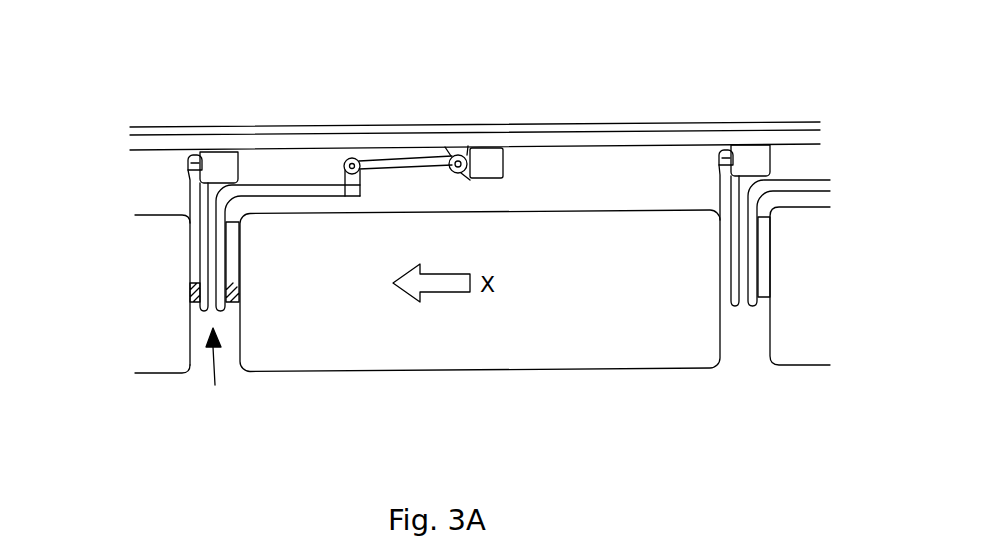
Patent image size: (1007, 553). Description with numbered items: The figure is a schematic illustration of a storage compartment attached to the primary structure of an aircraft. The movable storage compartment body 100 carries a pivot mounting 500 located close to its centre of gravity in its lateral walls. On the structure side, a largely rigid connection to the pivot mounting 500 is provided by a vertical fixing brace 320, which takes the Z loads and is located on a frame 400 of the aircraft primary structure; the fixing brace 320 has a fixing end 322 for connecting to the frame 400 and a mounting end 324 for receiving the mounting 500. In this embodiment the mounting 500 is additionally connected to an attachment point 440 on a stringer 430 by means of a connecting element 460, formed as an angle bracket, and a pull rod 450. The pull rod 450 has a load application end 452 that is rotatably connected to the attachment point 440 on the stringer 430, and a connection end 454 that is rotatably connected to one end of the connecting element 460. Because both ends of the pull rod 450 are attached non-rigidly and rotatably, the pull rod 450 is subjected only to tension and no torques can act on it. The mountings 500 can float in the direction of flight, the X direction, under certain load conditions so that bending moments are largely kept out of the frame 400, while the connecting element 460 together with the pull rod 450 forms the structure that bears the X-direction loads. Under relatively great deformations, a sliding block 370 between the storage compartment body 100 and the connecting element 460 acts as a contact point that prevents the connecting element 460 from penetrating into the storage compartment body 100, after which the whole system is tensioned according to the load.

The storage compartment body 100 is at (535, 340).
The fixing brace 320 is at (192, 184).
The fixing end 322 is at (193, 153).
The mounting end 324 is at (198, 289).
The sliding block 370 is at (188, 236).
The frame 400 is at (221, 166).
The stringer 430 is at (582, 127).
The attachment point 440 is at (492, 162).
The pull rod 450 is at (405, 158).
The load application end 452 is at (462, 154).
The connection end 454 is at (348, 170).
The connecting element 460 is at (283, 188).
The pivot mounting 500 is at (215, 385).